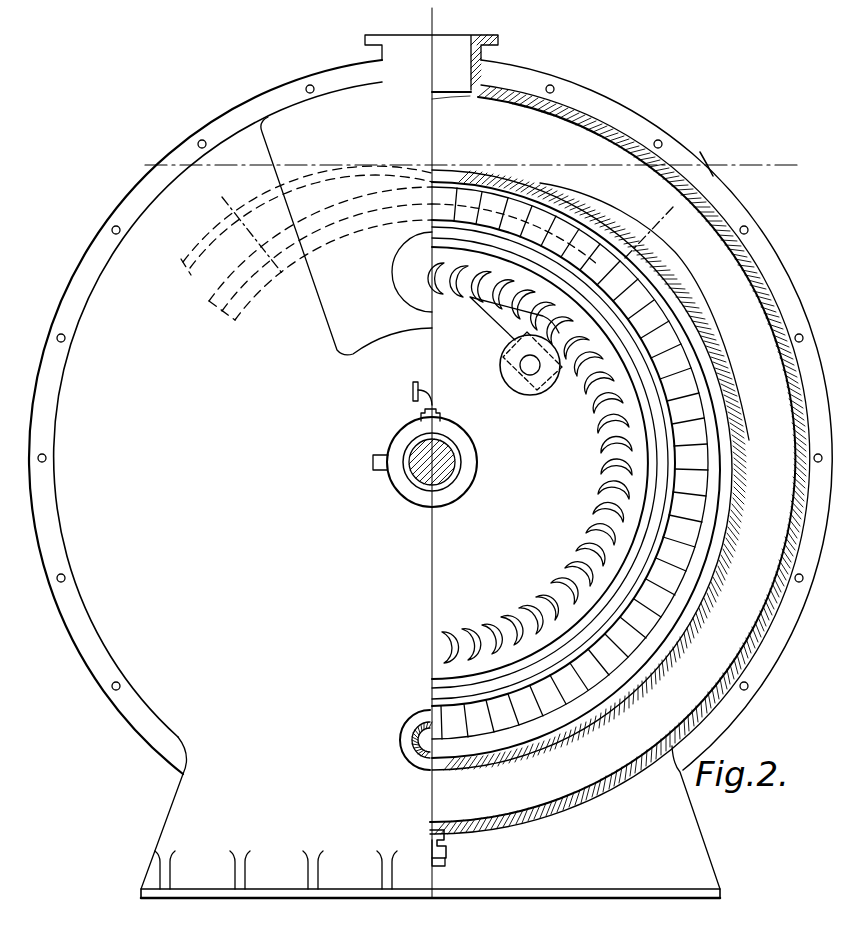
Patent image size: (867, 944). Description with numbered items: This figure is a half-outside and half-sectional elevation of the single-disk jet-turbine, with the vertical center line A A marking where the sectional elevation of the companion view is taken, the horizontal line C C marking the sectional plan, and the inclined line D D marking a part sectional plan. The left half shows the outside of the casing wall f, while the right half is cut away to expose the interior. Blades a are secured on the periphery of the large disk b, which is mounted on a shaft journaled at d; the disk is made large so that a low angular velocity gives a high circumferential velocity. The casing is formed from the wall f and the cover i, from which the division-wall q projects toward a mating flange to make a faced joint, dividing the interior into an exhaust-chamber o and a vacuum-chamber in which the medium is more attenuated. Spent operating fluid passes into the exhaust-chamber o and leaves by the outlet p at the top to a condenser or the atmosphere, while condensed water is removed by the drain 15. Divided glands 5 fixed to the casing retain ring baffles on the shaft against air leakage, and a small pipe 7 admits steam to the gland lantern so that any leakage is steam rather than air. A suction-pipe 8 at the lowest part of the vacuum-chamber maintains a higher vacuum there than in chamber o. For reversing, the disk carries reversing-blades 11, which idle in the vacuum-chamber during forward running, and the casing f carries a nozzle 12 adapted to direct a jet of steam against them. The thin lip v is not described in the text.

The section line A A is at (443, 449).
The outlet p is at (431, 62).
The exhaust-chamber o is at (481, 454).
The casing tongue lip v is at (512, 192).
The cover i is at (703, 170).
The section line C C is at (458, 164).
The section line D D is at (439, 227).
The blades a is at (481, 732).
The nozzle 12 is at (500, 331).
The small pipe 7 is at (412, 396).
The divided glands 5 is at (414, 450).
The journal d is at (455, 463).
The casing wall f is at (374, 479).
The disk b is at (631, 474).
The reversing-blades 11 is at (452, 638).
The division-wall q is at (735, 502).
The suction-pipe 8 is at (401, 743).
The drain 15 is at (448, 852).